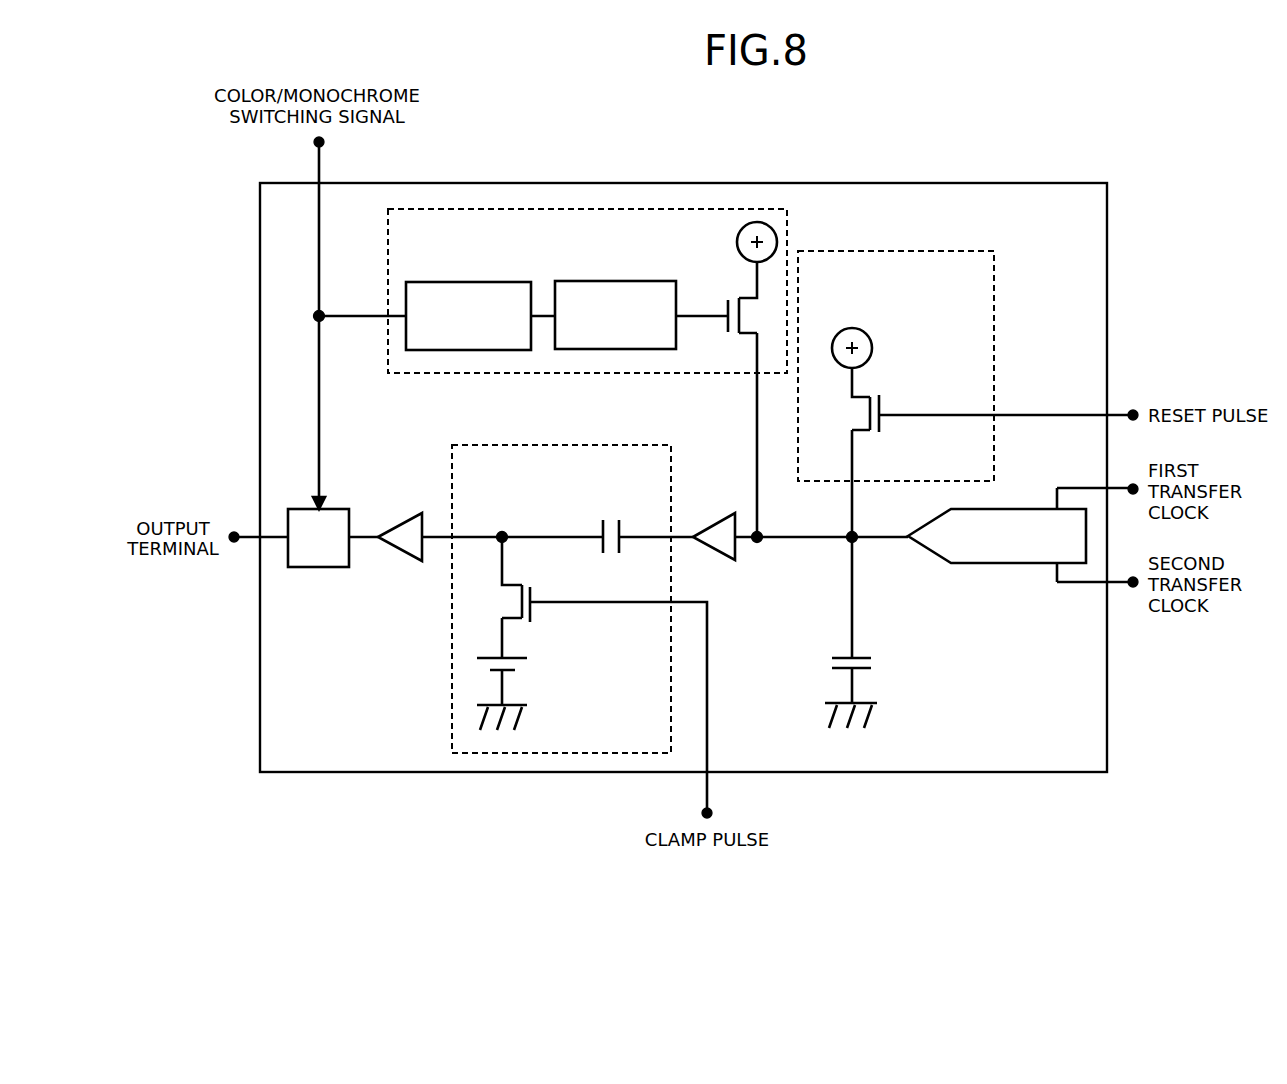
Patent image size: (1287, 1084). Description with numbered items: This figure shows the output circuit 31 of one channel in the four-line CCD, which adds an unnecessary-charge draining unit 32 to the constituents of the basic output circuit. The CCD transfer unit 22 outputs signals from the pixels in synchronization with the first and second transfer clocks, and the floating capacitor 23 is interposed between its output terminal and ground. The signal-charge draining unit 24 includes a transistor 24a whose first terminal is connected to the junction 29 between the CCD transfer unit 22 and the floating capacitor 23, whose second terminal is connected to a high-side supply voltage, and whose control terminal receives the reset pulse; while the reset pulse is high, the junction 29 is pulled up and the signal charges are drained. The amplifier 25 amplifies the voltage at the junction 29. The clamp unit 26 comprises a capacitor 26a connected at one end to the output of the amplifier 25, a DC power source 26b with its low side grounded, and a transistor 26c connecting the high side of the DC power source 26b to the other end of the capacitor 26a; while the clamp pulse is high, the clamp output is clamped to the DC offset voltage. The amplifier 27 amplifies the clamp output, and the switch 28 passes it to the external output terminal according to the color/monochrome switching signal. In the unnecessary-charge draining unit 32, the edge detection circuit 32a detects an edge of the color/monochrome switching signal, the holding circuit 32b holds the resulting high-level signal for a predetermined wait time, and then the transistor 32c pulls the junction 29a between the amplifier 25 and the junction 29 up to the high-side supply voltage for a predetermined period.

The output circuit 31 is at (878, 183).
The unnecessary-charge draining unit 32 is at (388, 243).
The edge detection circuit 32a is at (488, 282).
The holding circuit 32b is at (637, 281).
The transistor 32c is at (737, 298).
The signal-charge draining unit 24 is at (930, 251).
The transistor 24a is at (866, 397).
The CCD transfer unit 22 is at (1003, 509).
The floating capacitor 23 is at (872, 658).
The amplifier 25 is at (722, 520).
The clamp unit 26 is at (594, 445).
The capacitor 26a is at (600, 528).
The DC power source 26b is at (528, 658).
The transistor 26c is at (512, 585).
The amplifier 27 is at (405, 518).
The switch 28 is at (340, 509).
The junction 29 is at (846, 542).
The junction 29a is at (758, 543).